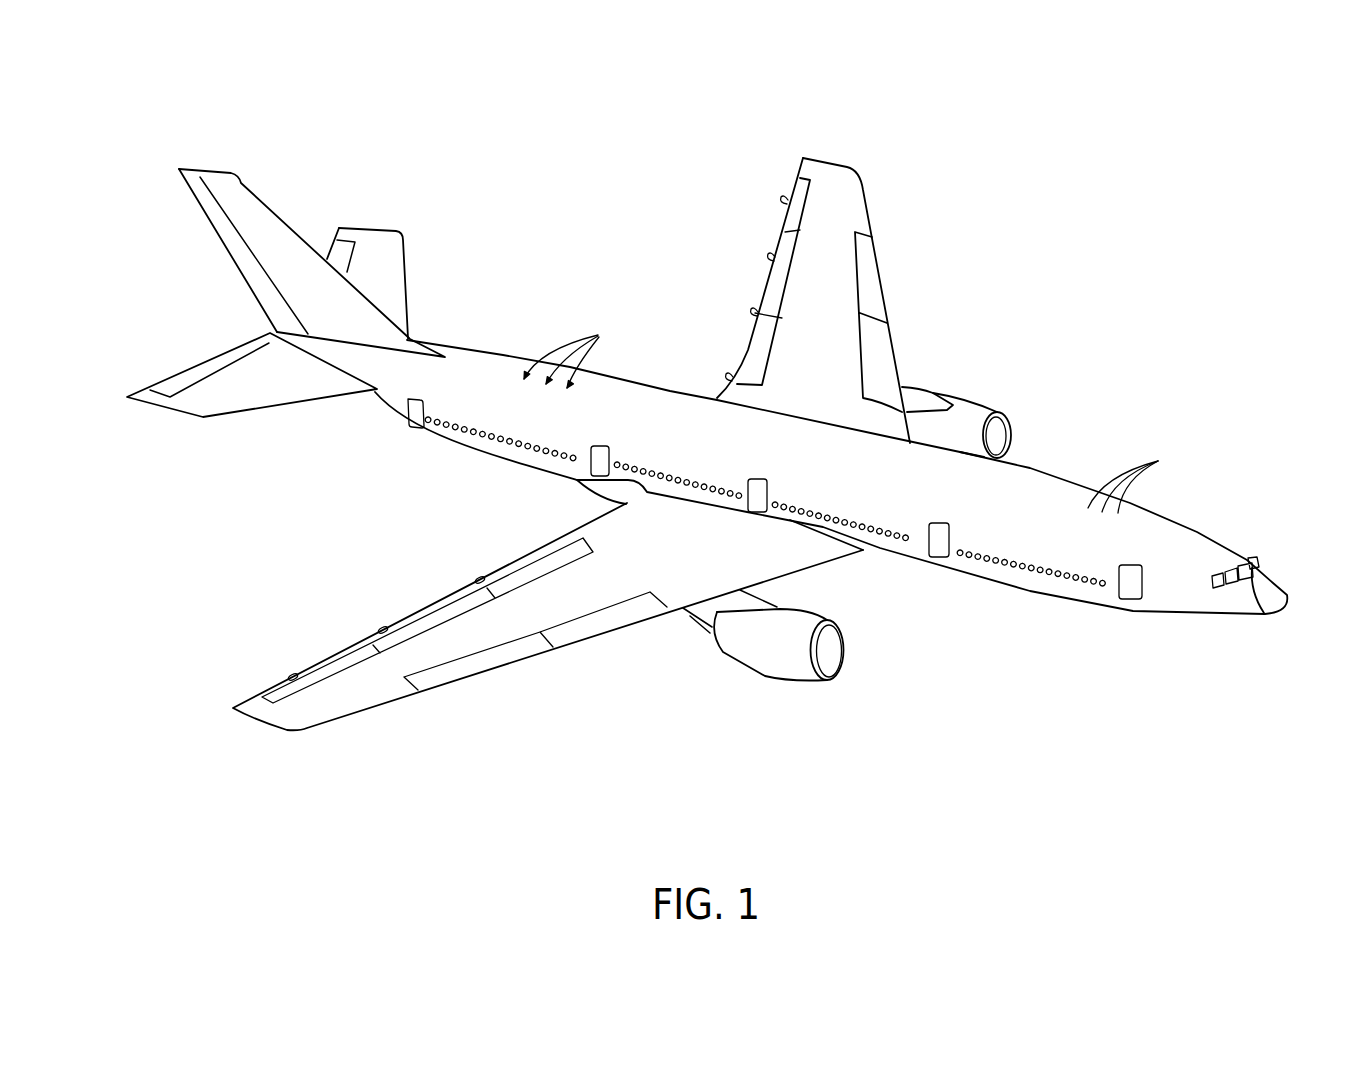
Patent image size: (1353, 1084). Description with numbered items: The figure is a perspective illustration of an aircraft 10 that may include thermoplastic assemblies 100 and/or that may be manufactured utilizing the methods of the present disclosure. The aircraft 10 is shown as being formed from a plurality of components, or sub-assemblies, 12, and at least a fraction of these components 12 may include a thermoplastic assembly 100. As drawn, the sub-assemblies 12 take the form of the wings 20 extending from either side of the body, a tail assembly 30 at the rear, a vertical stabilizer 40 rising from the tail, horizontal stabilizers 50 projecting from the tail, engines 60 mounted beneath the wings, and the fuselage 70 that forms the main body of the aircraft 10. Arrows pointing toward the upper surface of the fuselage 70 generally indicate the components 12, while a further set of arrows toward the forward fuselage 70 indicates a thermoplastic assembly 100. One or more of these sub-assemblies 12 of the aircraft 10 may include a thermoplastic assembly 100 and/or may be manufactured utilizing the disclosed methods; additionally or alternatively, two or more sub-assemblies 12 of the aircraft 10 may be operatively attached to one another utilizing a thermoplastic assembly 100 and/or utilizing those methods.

The aircraft 10 is at (1104, 159).
The components 12 is at (581, 354).
The wings 20 is at (858, 200).
The tail assembly 30 is at (187, 291).
The vertical stabilizer 40 is at (233, 178).
The horizontal stabilizers 50 is at (405, 257).
The engines 60 is at (983, 413).
The fuselage 70 is at (1025, 590).
The thermoplastic assembly 100 is at (1149, 480).